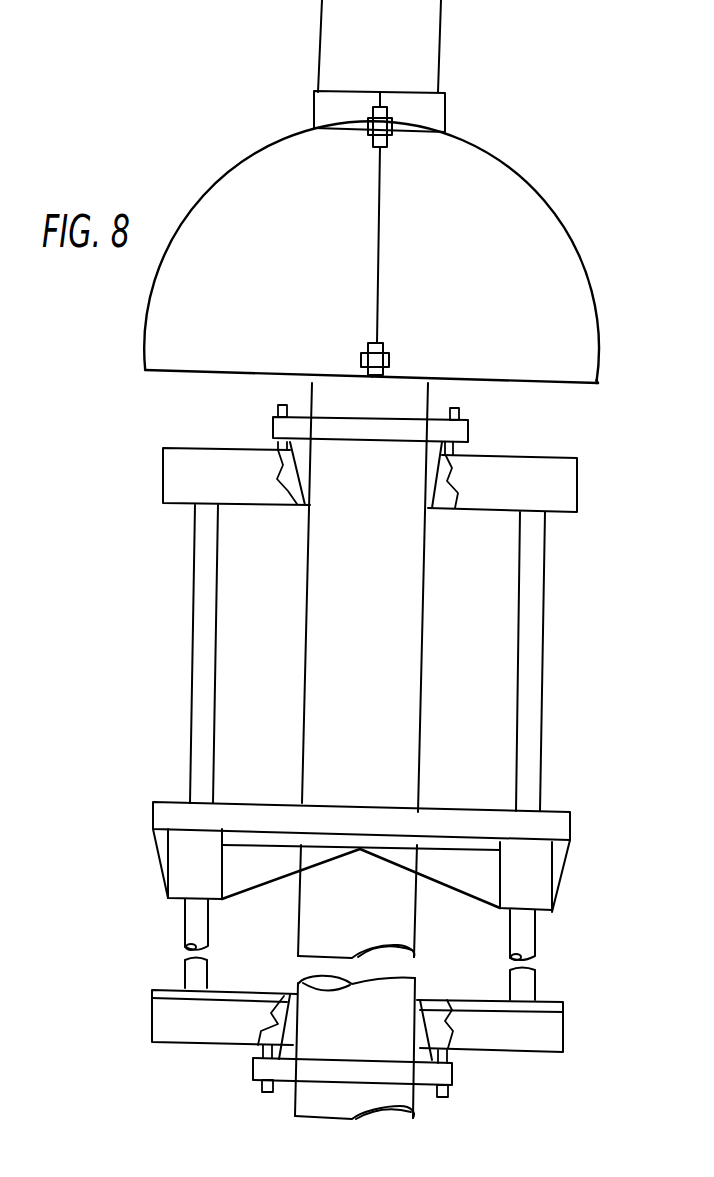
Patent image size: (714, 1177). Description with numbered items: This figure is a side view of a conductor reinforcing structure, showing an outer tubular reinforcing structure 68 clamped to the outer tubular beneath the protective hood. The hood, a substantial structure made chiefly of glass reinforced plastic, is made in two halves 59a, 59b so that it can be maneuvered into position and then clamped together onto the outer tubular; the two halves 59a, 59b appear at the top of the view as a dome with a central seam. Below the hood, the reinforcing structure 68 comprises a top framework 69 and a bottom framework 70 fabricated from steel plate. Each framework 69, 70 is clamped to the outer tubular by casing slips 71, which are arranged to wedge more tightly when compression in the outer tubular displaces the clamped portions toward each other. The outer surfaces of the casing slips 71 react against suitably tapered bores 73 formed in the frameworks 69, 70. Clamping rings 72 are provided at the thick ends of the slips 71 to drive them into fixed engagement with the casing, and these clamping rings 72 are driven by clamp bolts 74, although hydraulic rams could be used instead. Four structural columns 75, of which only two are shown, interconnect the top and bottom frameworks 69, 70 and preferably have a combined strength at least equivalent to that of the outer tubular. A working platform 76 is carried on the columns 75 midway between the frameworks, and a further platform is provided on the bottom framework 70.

The hood half 59a is at (507, 197).
The hood half 59b is at (228, 200).
The outer tubular reinforcing structure 68 is at (560, 723).
The top framework 69 is at (185, 483).
The bottom framework 70 is at (165, 1010).
The casing slips 71 is at (307, 465).
The clamping rings 72 is at (393, 428).
The tapered bores 73 is at (298, 488).
The clamp bolts 74 is at (277, 407).
The structural columns 75 is at (210, 629).
The working platform 76 is at (163, 812).